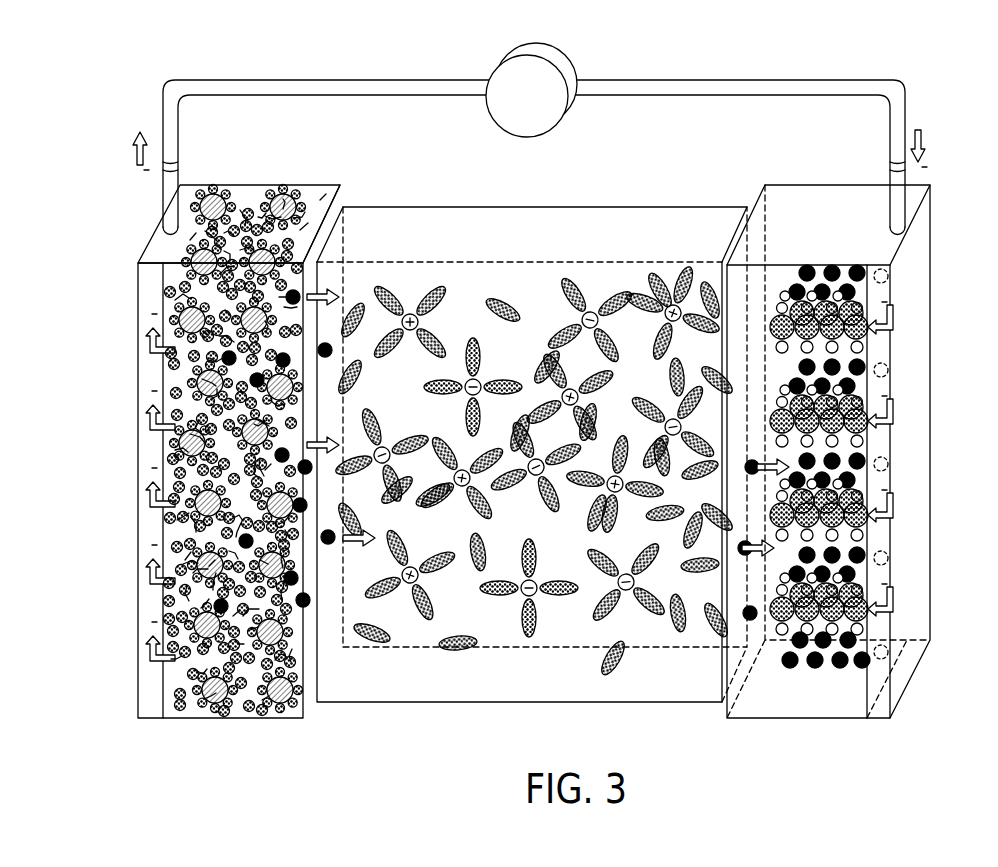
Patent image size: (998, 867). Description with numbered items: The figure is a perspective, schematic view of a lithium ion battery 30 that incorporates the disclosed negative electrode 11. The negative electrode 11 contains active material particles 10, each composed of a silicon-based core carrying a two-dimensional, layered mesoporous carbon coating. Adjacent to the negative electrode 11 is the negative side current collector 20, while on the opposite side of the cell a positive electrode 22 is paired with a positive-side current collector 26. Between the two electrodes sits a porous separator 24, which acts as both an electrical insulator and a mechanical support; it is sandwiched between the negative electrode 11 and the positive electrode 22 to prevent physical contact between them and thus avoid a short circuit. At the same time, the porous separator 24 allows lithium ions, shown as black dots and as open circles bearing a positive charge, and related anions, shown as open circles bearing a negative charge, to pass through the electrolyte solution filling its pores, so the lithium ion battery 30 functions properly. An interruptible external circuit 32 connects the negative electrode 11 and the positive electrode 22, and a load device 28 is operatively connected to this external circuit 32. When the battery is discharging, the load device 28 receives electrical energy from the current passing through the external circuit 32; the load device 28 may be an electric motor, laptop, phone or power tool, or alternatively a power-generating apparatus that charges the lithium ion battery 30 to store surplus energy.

The active material particles 10 is at (296, 735).
The negative electrode 11 is at (208, 444).
The negative side current collector 20 is at (138, 677).
The positive electrode 22 is at (854, 422).
The porous separator 24 is at (597, 240).
The positive-side current collector 26 is at (885, 699).
The load device 28 is at (534, 42).
The lithium ion battery 30 is at (560, 117).
The interruptible external circuit 32 is at (338, 80).